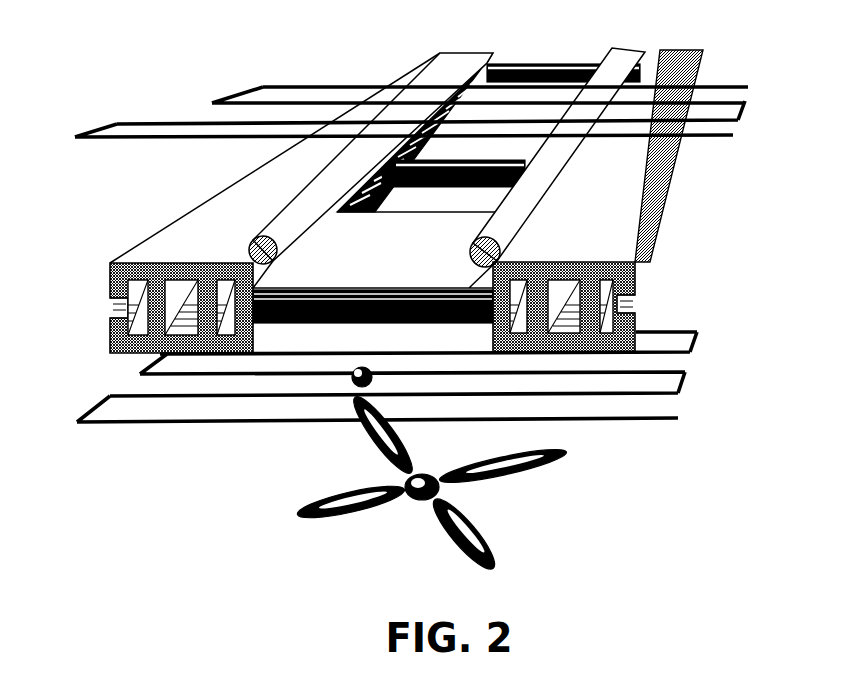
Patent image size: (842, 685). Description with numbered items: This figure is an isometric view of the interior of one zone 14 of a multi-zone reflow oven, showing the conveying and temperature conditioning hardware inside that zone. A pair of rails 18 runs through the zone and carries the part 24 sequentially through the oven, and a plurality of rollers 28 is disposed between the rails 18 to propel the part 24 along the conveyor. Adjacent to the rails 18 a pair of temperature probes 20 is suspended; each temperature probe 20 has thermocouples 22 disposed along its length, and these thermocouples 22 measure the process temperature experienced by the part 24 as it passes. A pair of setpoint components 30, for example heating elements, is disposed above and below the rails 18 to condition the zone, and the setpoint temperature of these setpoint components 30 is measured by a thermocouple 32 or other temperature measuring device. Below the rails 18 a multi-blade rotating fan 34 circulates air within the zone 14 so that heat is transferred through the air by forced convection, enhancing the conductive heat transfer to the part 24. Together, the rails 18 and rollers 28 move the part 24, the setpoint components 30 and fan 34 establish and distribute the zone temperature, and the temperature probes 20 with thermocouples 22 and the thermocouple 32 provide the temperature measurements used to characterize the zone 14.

The zone 14 is at (411, 215).
The rails 18 is at (209, 241).
The temperature probe 20 is at (309, 209).
The thermocouples 22 is at (357, 166).
The part 24 is at (364, 258).
The rollers 28 is at (537, 62).
The setpoint components 30 is at (148, 118).
The thermocouple 32 is at (355, 368).
The multi-blade rotating fan 34 is at (362, 513).